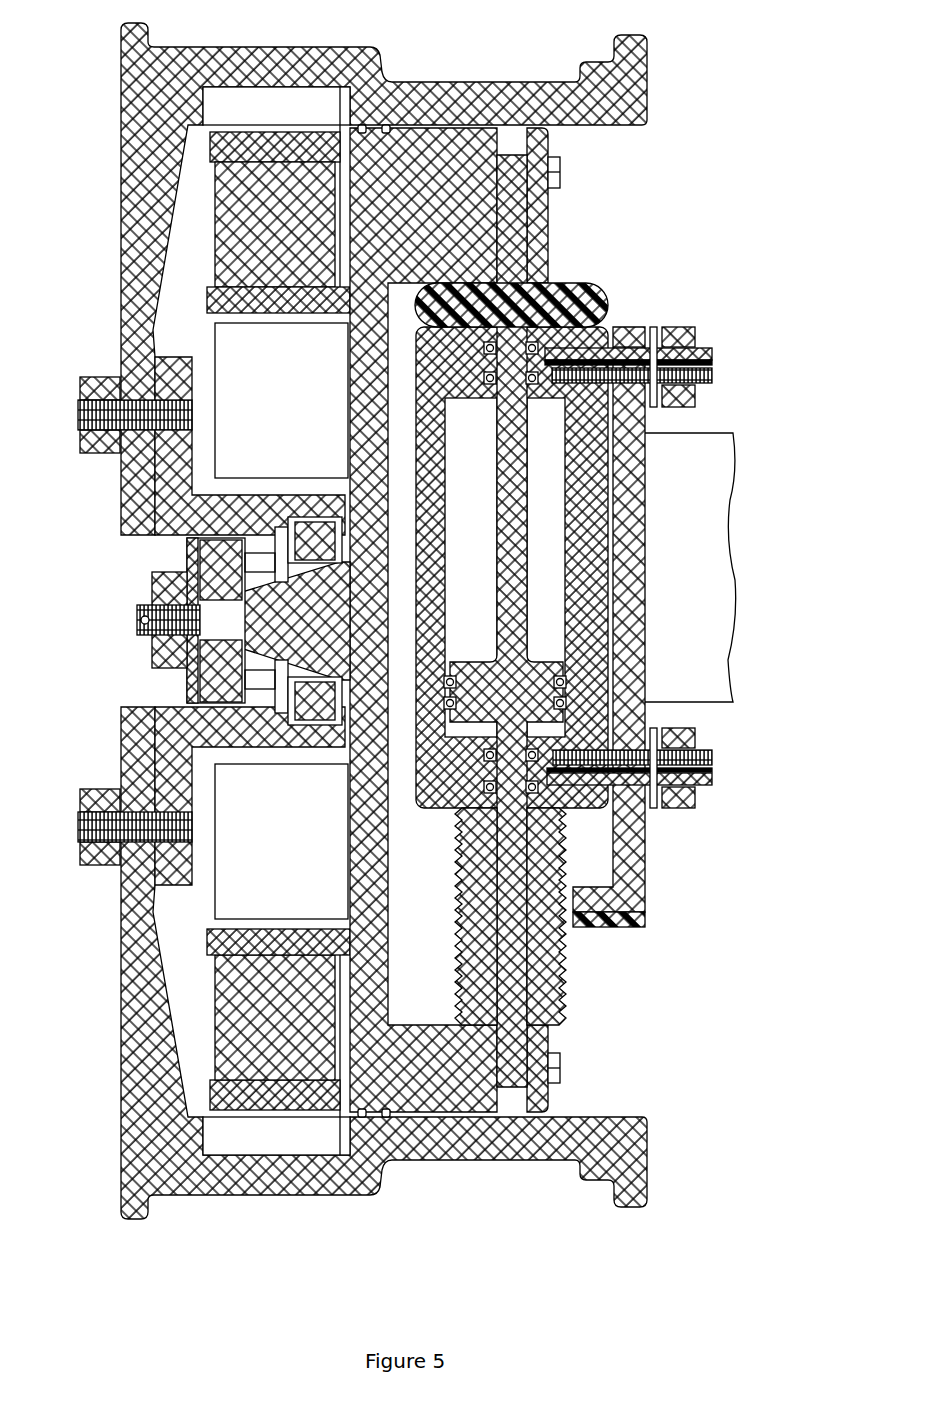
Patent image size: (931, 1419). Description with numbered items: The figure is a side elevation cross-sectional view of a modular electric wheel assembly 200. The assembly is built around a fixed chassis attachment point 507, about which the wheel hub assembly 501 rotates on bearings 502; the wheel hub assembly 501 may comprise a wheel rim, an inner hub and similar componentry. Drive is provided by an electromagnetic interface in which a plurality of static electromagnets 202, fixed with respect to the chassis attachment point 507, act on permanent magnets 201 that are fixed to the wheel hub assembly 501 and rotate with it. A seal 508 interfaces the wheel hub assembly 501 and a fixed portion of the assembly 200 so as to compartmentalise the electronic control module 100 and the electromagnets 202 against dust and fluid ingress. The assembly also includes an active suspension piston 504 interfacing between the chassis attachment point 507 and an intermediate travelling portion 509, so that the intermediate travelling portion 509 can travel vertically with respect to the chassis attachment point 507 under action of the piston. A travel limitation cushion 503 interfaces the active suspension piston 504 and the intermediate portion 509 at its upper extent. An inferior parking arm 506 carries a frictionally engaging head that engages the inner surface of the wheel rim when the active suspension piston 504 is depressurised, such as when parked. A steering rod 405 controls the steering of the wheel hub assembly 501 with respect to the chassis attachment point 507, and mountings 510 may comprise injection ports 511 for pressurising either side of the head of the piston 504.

The modular electric wheel assembly 200 is at (772, 66).
The wheel hub assembly 501 is at (381, 54).
The permanent magnets 201 is at (276, 621).
The electromagnets 202 is at (213, 260).
The electronic control module 100 is at (281, 621).
The bearings 502 is at (160, 557).
The travel limitation cushion 503 is at (606, 290).
The active suspension piston 504 is at (450, 807).
The inferior parking arm 506 is at (640, 928).
The chassis attachment point 507 is at (735, 433).
The seal 508 is at (389, 134).
The intermediate travelling portion 509 is at (390, 902).
The mountings 510 is at (703, 346).
The injection ports 511 is at (711, 363).
The steering rod 405 is at (515, 970).